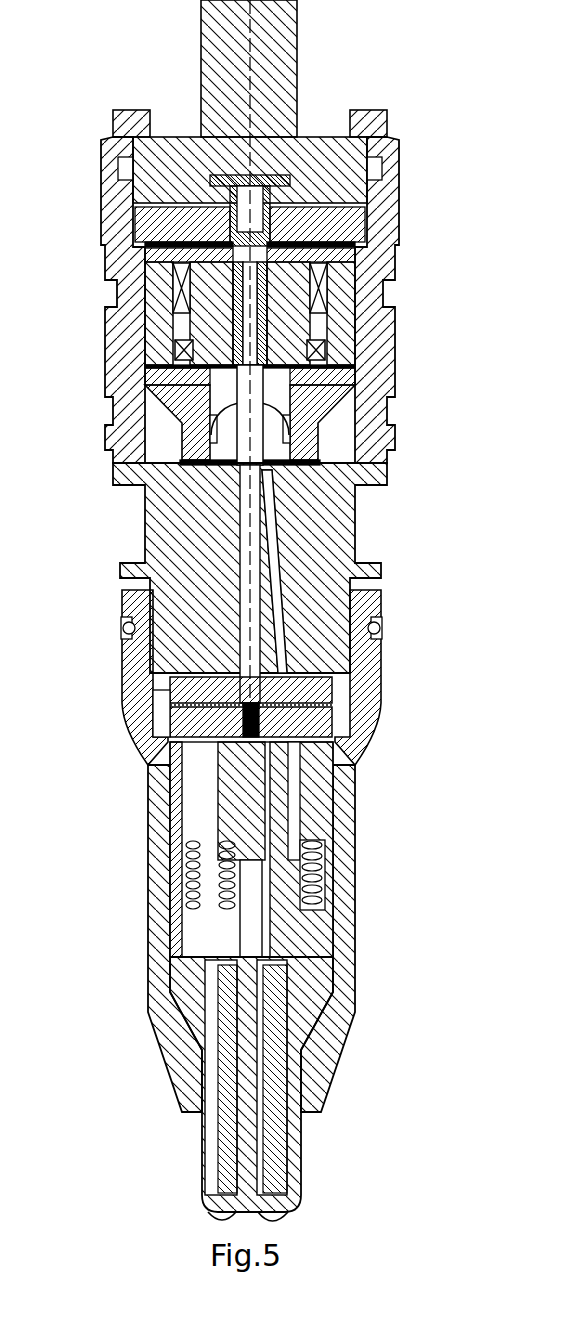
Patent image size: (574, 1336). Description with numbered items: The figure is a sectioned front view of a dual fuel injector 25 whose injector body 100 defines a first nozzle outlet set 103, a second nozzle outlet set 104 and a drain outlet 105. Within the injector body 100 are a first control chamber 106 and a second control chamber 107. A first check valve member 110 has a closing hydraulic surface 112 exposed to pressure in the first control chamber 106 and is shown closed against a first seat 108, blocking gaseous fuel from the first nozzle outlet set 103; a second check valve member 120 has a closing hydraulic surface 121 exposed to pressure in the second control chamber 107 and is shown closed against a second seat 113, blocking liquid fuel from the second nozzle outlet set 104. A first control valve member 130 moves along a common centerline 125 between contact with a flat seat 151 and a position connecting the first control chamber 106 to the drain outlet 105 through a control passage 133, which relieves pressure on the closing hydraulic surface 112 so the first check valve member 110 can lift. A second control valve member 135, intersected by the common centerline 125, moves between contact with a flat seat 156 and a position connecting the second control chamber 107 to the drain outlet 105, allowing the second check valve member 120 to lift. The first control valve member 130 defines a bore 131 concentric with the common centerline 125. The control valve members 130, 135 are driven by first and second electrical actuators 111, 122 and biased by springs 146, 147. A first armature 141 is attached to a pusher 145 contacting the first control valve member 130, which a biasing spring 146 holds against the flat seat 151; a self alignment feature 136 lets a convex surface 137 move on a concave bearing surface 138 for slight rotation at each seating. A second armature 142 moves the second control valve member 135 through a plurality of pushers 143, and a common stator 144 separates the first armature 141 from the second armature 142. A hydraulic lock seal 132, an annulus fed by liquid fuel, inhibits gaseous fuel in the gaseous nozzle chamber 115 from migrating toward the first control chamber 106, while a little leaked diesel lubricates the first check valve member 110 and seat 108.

The fuel injector 25 is at (77, 126).
The injector body 100 is at (104, 327).
The first nozzle outlet set 103 is at (290, 1211).
The second nozzle outlet set 104 is at (220, 1215).
The drain outlet 105 is at (385, 450).
The first control chamber 106 is at (295, 753).
The second control chamber 107 is at (148, 762).
The first seat 108 is at (265, 1188).
The first check valve member 110 is at (292, 820).
The first electrical actuator 111 is at (155, 351).
The closing hydraulic surface 112 is at (280, 750).
The second seat 113 is at (222, 1188).
The gaseous nozzle chamber 115 is at (307, 948).
The second check valve member 120 is at (200, 805).
The closing hydraulic surface 121 is at (182, 726).
The second electrical actuator 122 is at (150, 300).
The common centerline 125 is at (255, 42).
The first control valve member 130 is at (290, 353).
The bore 131 is at (214, 353).
The hydraulic lock seal 132 is at (318, 788).
The control passage 133 is at (284, 570).
The second control valve member 135 is at (247, 703).
The self alignment feature 136 is at (193, 398).
The convex surface 137 is at (330, 394).
The concave bearing surface 138 is at (185, 435).
The first armature 141 is at (355, 340).
The second armature 142 is at (150, 241).
The pushers 143 is at (345, 328).
The common stator 144 is at (330, 274).
The pusher 145 is at (340, 366).
The biasing spring 146 is at (138, 264).
The spring 147 is at (340, 706).
The flat seat 151 is at (325, 428).
The flat seat 156 is at (315, 738).